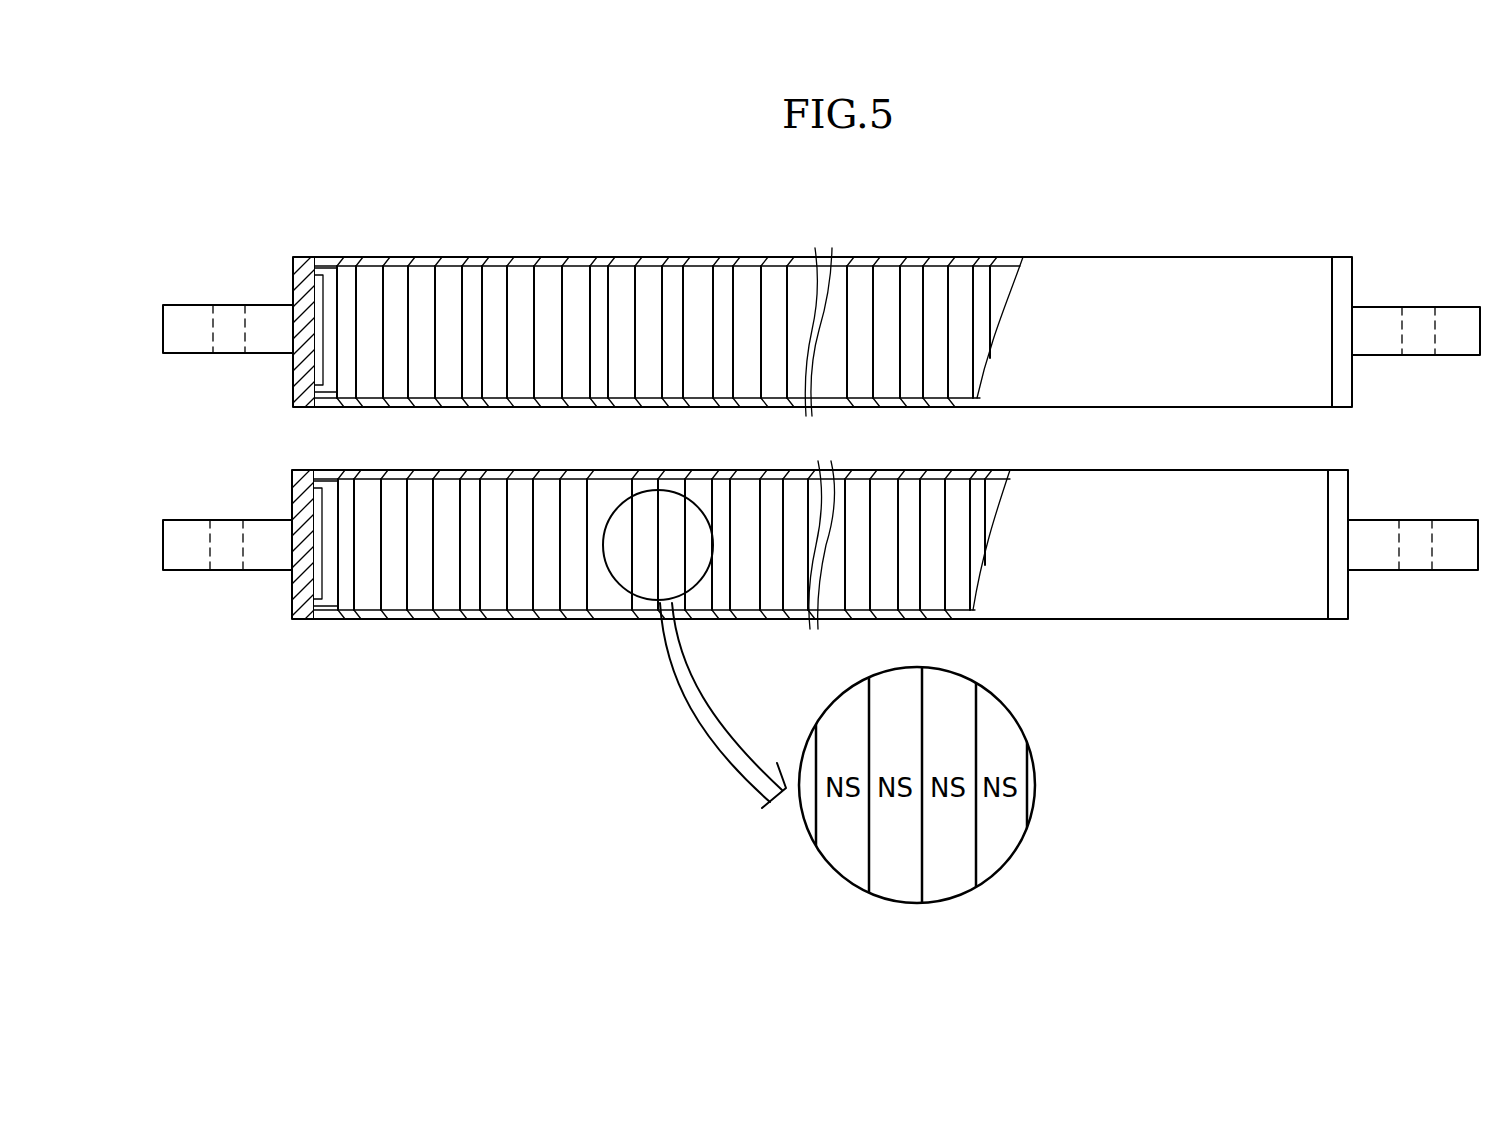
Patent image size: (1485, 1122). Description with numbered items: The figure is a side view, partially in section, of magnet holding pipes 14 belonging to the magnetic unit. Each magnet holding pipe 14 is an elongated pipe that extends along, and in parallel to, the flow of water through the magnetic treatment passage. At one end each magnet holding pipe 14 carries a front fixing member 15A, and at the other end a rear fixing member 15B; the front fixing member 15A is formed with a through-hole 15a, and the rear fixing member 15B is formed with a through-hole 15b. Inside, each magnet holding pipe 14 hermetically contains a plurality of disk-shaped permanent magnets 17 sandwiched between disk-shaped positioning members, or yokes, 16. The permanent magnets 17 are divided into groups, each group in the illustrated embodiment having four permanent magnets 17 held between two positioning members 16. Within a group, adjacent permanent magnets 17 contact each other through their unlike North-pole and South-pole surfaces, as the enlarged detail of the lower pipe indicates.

The magnet holding pipe 14 is at (1140, 257).
The front fixing member 15A is at (1455, 355).
The through-hole 15a is at (1415, 318).
The rear fixing member 15B is at (175, 355).
The through-hole 15b is at (230, 320).
The positioning member 16 is at (348, 318).
The permanent magnet 17 is at (450, 272).